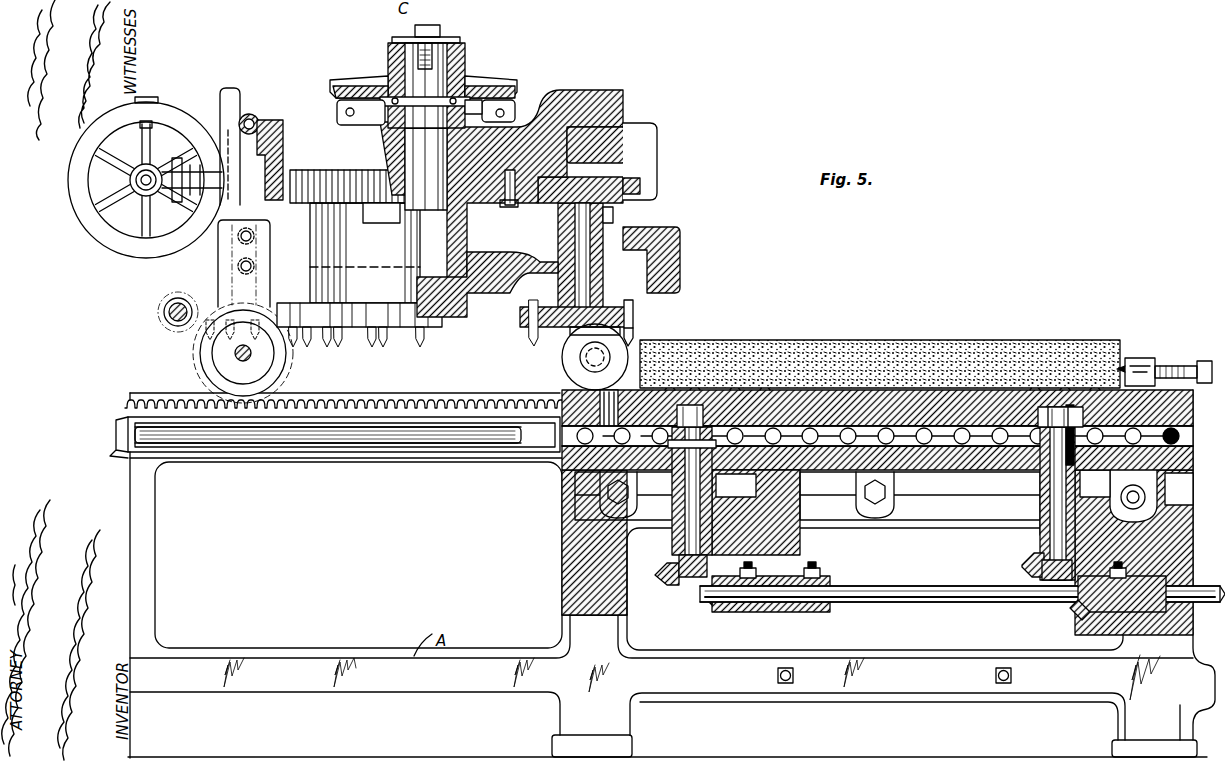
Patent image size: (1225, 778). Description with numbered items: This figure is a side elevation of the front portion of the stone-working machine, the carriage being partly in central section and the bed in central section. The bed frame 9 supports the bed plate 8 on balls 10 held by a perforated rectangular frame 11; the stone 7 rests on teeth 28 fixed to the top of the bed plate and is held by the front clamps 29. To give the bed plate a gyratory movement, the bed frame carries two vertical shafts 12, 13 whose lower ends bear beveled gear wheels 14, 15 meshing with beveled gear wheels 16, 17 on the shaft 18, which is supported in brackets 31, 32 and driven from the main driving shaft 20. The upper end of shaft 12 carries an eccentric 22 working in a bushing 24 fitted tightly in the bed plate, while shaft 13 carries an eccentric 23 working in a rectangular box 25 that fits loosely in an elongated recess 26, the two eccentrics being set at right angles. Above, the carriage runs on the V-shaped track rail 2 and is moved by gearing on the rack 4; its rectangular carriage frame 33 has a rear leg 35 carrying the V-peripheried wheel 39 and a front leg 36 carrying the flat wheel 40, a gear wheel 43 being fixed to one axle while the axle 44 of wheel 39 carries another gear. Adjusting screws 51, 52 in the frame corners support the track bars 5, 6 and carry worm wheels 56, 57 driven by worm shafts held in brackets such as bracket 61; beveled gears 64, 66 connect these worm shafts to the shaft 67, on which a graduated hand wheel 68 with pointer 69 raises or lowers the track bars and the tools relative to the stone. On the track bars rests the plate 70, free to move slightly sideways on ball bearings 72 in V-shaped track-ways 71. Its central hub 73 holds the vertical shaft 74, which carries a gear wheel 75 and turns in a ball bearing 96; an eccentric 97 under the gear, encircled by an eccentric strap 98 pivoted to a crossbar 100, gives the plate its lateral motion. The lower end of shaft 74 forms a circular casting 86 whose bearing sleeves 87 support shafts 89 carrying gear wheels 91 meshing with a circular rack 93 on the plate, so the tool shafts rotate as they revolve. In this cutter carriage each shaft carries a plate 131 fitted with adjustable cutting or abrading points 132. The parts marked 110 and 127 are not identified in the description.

The V-shaped track rail 2 is at (444, 434).
The rack 4 is at (488, 440).
The track bar 5 is at (226, 125).
The track bar 6 is at (612, 135).
The stone 7 is at (988, 410).
The bed plate 8 is at (923, 390).
The bed frame 9 is at (940, 452).
The balls 10 is at (980, 450).
The rectangular frame 11 is at (900, 455).
The vertical shaft 12 is at (686, 535).
The vertical shaft 13 is at (1057, 540).
The beveled gear wheel 14 is at (668, 578).
The beveled gear wheel 15 is at (1022, 568).
The beveled gear wheel 16 is at (722, 612).
The beveled gear wheel 17 is at (1090, 615).
The shaft 18 is at (934, 598).
The main driving shaft 20 is at (380, 438).
The eccentric 22 is at (712, 408).
The eccentric 23 is at (1076, 415).
The bushing 24 is at (668, 410).
The rectangular box 25 is at (1056, 425).
The rectangular elongated recess 26 is at (1023, 418).
The teeth 28 is at (698, 412).
The front clamps 29 is at (1165, 368).
The bracket 31 is at (800, 550).
The bracket 32 is at (1160, 548).
The rectangular carriage frame 33 is at (680, 262).
The rear leg 35 is at (214, 370).
The front leg 36 is at (568, 358).
The wheel 39 is at (285, 372).
The wheel 40 is at (575, 372).
The gear wheel 43 is at (132, 393).
The axle 44 is at (235, 352).
The adjusting screw 51 is at (220, 255).
The adjusting screw 52 is at (614, 216).
The worm wheel 56 is at (292, 173).
The worm wheel 57 is at (645, 186).
The bracket 61 is at (655, 165).
The beveled gear 64 is at (135, 188).
The beveled gear 66 is at (135, 240).
The shaft 67 is at (144, 182).
The graduated hand wheel 68 is at (70, 170).
The pointer 69 is at (150, 98).
The rectangular plate 70 is at (548, 115).
The V-shaped track-ways 71 is at (252, 116).
The ball bearings 72 is at (266, 118).
The central hub 73 is at (390, 148).
The vertical shaft 74 is at (412, 160).
The gear wheel 75 is at (378, 82).
The circular casting 86 is at (488, 316).
The bearing sleeves 87 is at (350, 250).
The shafts 89 is at (590, 250).
The gear wheels 91 is at (670, 205).
The circular rack 93 is at (516, 200).
The ball bearing 96 is at (450, 103).
The eccentric 97 is at (494, 104).
The eccentric strap 98 is at (510, 108).
The crossbar 100 is at (334, 116).
The rail 110 is at (238, 430).
The ring 127 is at (166, 316).
The plate 131 is at (356, 328).
The cutting or abrading points 132 is at (384, 330).